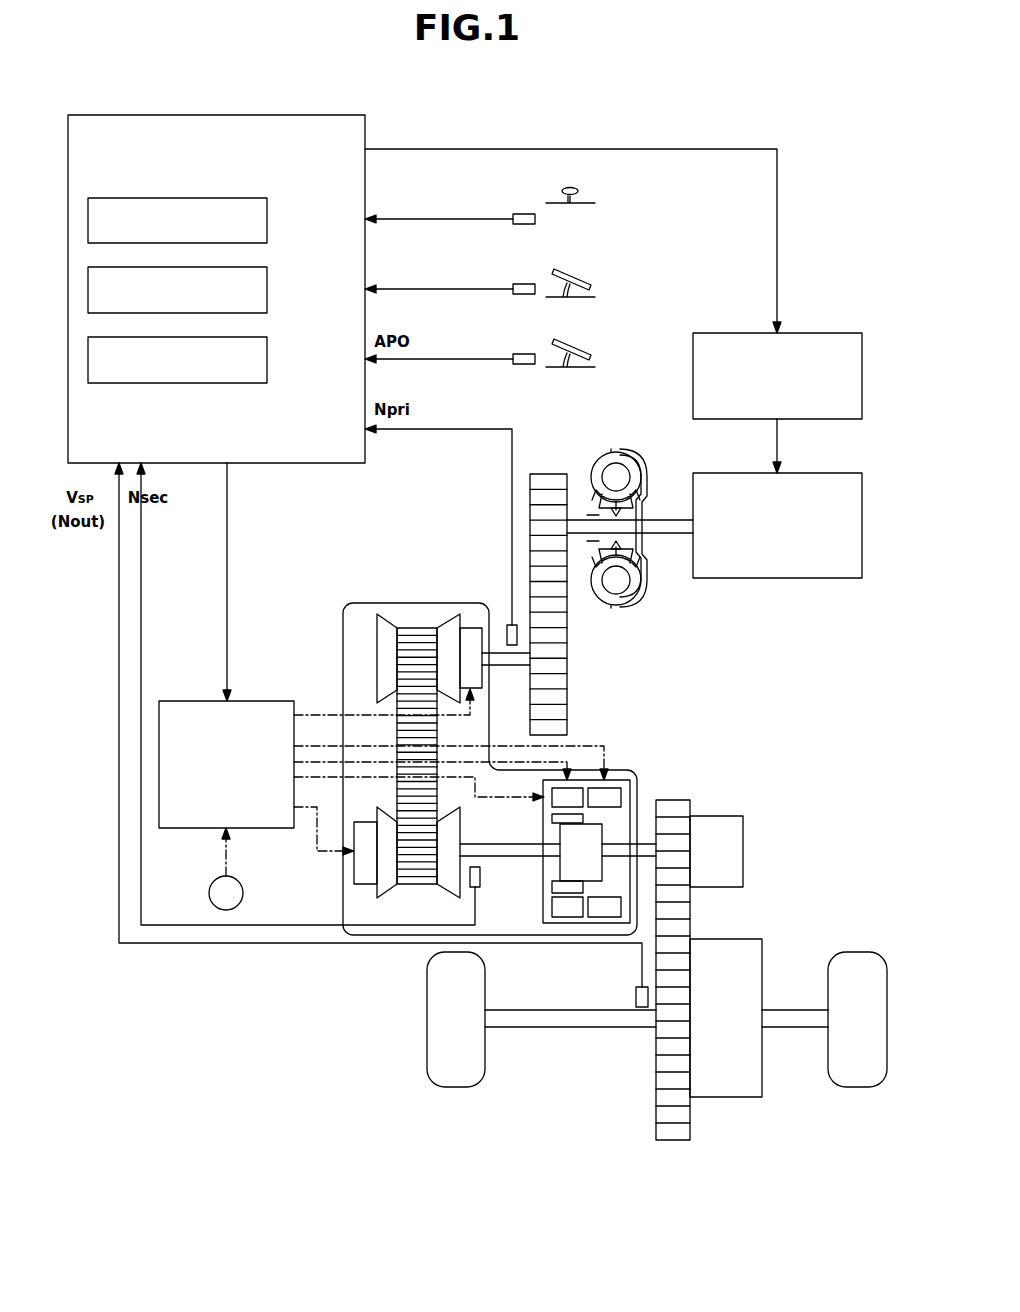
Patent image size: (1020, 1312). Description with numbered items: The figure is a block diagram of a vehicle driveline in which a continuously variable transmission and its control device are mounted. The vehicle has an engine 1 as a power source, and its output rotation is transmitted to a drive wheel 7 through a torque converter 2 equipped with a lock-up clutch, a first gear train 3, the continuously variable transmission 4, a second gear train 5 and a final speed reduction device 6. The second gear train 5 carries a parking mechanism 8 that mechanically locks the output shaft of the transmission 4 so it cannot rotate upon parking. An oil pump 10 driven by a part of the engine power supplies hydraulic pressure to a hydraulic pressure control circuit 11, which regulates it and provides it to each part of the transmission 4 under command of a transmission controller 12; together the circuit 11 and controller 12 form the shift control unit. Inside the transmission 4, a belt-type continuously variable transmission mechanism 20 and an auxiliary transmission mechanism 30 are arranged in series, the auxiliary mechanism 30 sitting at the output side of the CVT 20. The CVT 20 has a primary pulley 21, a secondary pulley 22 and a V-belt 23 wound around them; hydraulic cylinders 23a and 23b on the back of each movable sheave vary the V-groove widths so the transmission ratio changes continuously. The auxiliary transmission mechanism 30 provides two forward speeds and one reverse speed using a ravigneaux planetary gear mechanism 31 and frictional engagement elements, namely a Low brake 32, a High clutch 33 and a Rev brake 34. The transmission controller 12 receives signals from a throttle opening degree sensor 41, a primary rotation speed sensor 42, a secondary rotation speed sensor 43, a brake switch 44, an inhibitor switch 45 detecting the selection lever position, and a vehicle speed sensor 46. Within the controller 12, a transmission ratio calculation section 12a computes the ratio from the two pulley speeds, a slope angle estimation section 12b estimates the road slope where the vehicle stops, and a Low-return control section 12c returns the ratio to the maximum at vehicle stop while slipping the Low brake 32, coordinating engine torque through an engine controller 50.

The engine 1 is at (778, 578).
The torque converter 2 is at (632, 448).
The first gear train 3 is at (559, 460).
The continuously variable transmission 4 is at (370, 603).
The second gear train 5 is at (681, 1158).
The final speed reduction device 6 is at (726, 1097).
The drive wheel 7 is at (459, 1087).
The parking mechanism 8 is at (743, 851).
The oil pump 10 is at (209, 893).
The hydraulic pressure control circuit 11 is at (181, 701).
The transmission controller 12 is at (222, 115).
The transmission ratio calculation section 12a is at (268, 222).
The slope angle estimation section 12b is at (268, 292).
The Low-return control section 12c is at (268, 362).
The belt-type continuously variable transmission mechanism 20 is at (376, 724).
The primary pulley 21 is at (377, 644).
The secondary pulley 22 is at (377, 895).
The V-belt 23 is at (411, 625).
The hydraulic cylinder 23a is at (470, 628).
The hydraulic cylinder 23b is at (354, 870).
The auxiliary transmission mechanism 30 is at (574, 817).
The ravigneaux planetary gear mechanism 31 is at (563, 837).
The Low brake 32 is at (552, 805).
The High clutch 33 is at (552, 897).
The Rev brake 34 is at (628, 794).
The throttle opening degree sensor 41 is at (525, 352).
The primary rotation speed sensor 42 is at (506, 632).
The secondary rotation speed sensor 43 is at (480, 877).
The brake switch 44 is at (525, 282).
The inhibitor switch 45 is at (525, 212).
The vehicle speed sensor 46 is at (636, 997).
The engine controller 50 is at (829, 331).